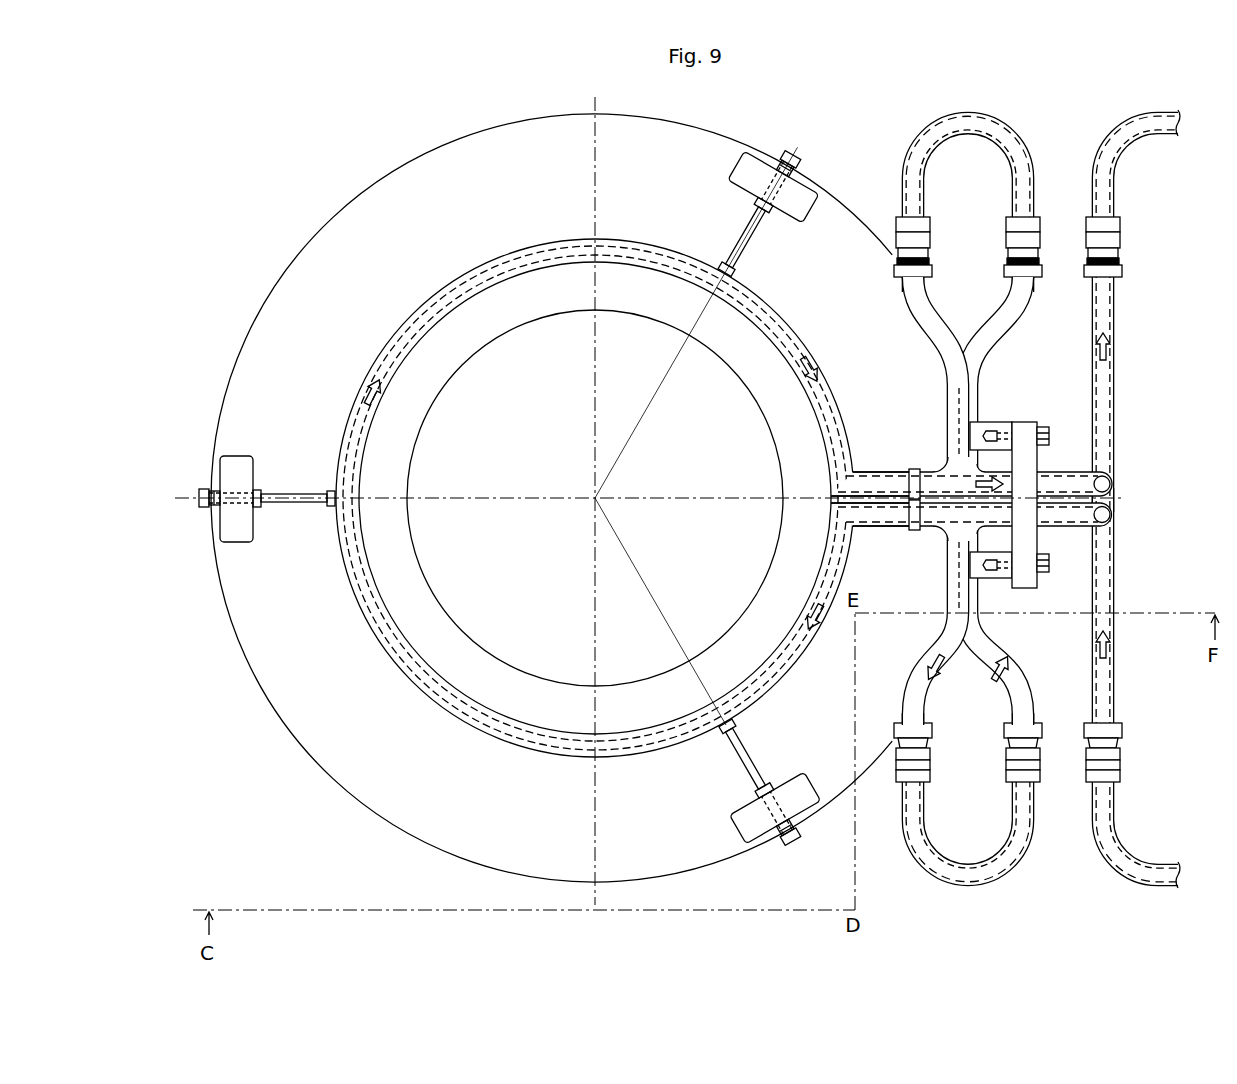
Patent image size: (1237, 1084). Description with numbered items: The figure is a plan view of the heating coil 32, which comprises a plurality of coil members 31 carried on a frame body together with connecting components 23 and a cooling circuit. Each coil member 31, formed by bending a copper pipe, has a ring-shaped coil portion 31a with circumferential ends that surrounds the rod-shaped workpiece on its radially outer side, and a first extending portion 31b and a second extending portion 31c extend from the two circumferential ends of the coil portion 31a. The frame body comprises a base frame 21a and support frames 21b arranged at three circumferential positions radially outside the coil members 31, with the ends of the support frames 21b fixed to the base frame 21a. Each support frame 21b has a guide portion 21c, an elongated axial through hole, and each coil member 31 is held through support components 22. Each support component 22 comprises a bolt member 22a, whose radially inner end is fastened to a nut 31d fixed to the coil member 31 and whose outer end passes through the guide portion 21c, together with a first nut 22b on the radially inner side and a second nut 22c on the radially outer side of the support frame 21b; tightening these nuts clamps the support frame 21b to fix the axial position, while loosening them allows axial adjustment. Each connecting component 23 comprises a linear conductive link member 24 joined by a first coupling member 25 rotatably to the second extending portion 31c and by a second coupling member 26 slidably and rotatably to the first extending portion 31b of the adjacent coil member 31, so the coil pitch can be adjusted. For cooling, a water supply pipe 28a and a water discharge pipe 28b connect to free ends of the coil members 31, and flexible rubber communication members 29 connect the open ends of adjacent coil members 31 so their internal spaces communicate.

The base frame 21a is at (412, 188).
The support frame 21b is at (238, 460).
The guide portion 21c is at (762, 192).
The support component 22 is at (499, 500).
The bolt member 22a is at (285, 505).
The first nut 22b is at (258, 515).
The second nut 22c is at (213, 510).
The connecting component 23 is at (1027, 405).
The link member 24 is at (1030, 461).
The first coupling member 25 is at (1049, 437).
The second coupling member 26 is at (1047, 567).
The water supply pipe 28a is at (1109, 693).
The water discharge pipe 28b is at (1109, 320).
The communication member 29 is at (981, 122).
The coil member 31 is at (574, 500).
The coil portion 31a is at (466, 722).
The first extending portion 31b is at (958, 600).
The second extending portion 31c is at (890, 482).
The nut 31d is at (328, 489).
The heating coil 32 is at (1005, 498).